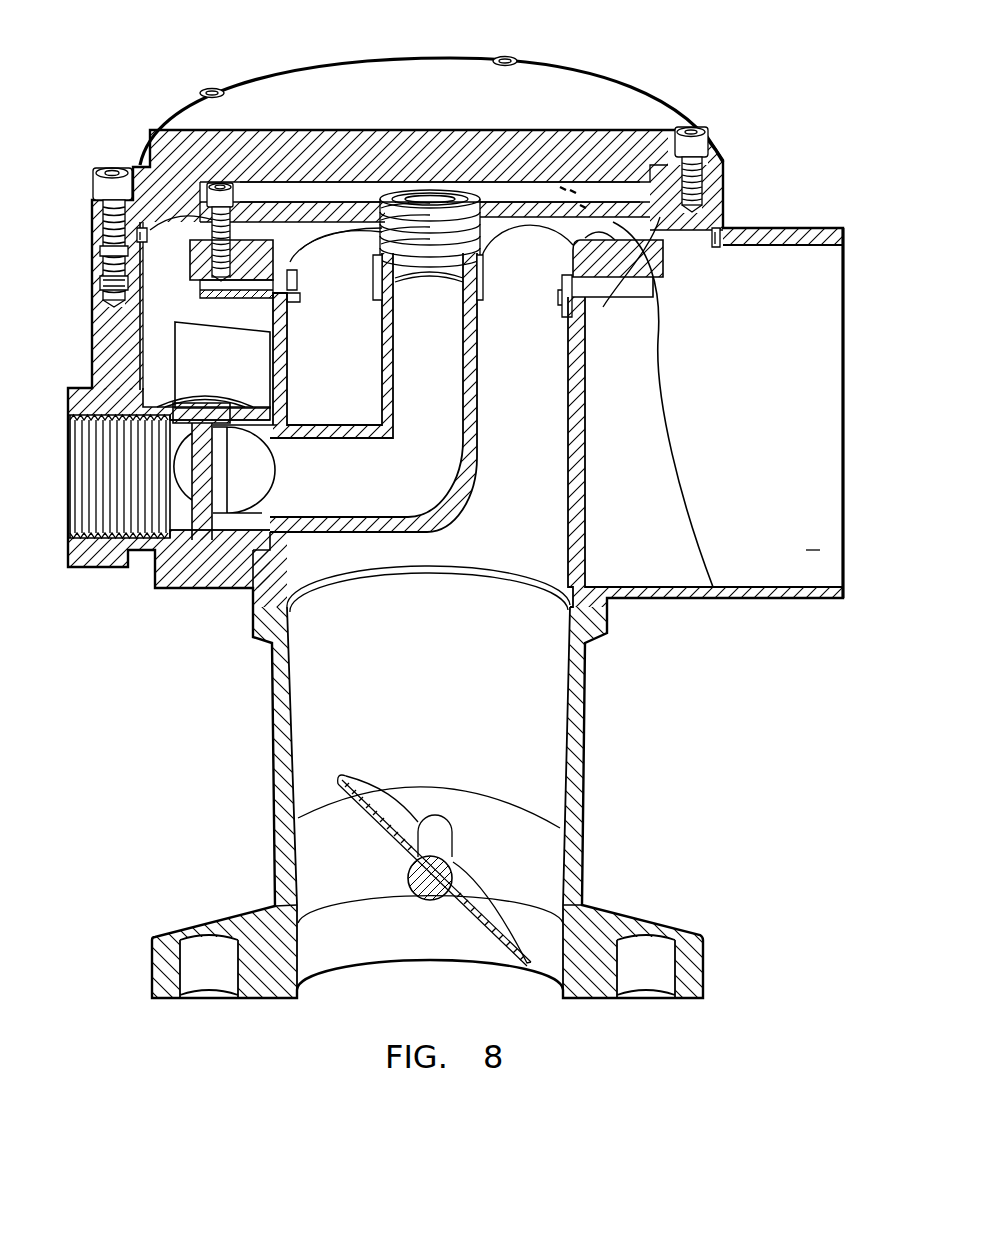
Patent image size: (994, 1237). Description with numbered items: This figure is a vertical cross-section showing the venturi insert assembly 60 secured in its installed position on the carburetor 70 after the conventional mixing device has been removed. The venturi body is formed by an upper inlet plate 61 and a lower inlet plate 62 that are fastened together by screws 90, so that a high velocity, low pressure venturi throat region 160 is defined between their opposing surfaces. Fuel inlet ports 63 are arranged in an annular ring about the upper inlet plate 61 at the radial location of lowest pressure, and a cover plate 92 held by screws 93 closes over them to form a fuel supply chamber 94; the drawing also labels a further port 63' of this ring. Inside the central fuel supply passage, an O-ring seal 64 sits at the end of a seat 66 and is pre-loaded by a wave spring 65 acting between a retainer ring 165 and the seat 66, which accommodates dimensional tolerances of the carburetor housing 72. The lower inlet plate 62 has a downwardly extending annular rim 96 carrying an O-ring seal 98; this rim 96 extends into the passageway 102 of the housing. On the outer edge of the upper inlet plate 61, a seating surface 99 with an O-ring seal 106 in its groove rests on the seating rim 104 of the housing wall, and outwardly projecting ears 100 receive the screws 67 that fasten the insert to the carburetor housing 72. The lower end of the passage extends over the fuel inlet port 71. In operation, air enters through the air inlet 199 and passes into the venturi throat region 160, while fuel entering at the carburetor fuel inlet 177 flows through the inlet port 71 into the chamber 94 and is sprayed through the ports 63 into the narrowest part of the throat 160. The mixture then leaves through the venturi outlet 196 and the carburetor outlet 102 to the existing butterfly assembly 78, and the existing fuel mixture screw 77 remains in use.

The venturi insert assembly 60 is at (630, 62).
The cover plate 92 is at (283, 92).
The screws 67 is at (115, 185).
The bolt 63' is at (247, 189).
The fuel supply chamber 94 is at (357, 193).
The retainer ring 165 is at (490, 240).
The fuel inlet ports 63 is at (407, 244).
The screws 93 is at (697, 147).
The ears 100 is at (93, 210).
The seating surface 99 is at (103, 252).
The seating rim 104 is at (118, 280).
The O-ring seal 106 is at (140, 237).
The screws 90 is at (207, 222).
The O-ring seal 98 is at (282, 308).
The venturi outlet 196 is at (290, 293).
The wave spring 65 is at (368, 238).
The seat 66 is at (377, 272).
The O-ring seal 64 is at (430, 275).
The upper inlet plate 61 is at (478, 273).
The annular rim 96 is at (567, 300).
The lower inlet plate 62 is at (590, 235).
The venturi throat region 160 is at (625, 227).
The fuel inlet port 71 is at (393, 383).
The passageway 102 is at (548, 412).
The carburetor fuel inlet 177 is at (64, 453).
The fuel mixture screw 77 is at (173, 598).
The carburetor 70 is at (219, 631).
The butterfly assembly 78 is at (264, 791).
The carburetor housing 72 is at (687, 597).
The air inlet 199 is at (790, 550).